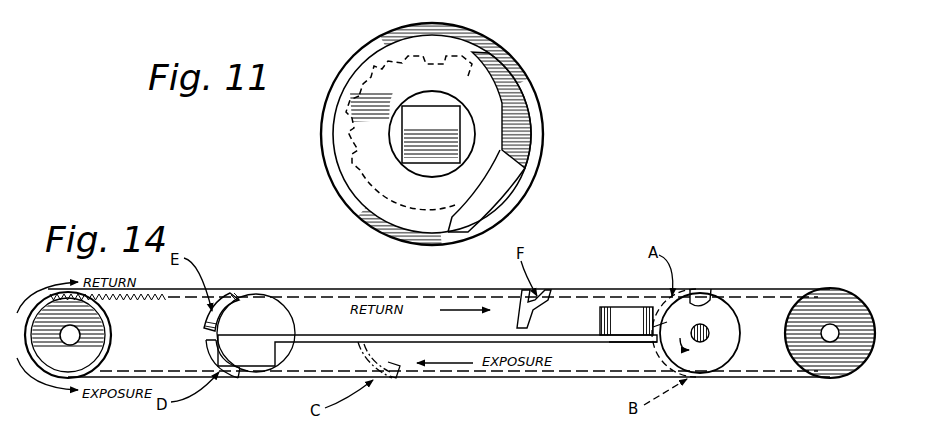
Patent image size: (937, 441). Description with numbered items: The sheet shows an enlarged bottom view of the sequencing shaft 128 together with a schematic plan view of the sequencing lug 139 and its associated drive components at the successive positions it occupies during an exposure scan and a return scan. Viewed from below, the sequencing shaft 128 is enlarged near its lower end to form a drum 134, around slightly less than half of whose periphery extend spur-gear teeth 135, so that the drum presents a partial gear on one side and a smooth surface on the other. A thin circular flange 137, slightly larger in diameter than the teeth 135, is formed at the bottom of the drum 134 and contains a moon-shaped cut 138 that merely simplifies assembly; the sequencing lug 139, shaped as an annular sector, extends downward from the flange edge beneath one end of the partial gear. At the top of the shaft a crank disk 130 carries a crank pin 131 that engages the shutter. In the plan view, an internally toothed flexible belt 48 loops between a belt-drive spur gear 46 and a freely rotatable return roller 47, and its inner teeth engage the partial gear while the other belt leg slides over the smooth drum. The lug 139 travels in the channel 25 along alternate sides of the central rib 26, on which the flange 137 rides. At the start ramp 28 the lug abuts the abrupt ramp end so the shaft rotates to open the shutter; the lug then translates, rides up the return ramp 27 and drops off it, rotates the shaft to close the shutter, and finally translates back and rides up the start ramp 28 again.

In FIG. 14, the channel 25 is at (332, 302).
In FIG. 14, the rib 26 is at (609, 342).
In FIG. 14, the return ramp 27 is at (262, 355).
In FIG. 14, the start ramp 28 is at (600, 322).
In FIG. 14, the belt-drive spur gear 46 is at (100, 350).
In FIG. 14, the return roller 47 is at (850, 372).
In FIG. 14, the flexible belt 48 is at (297, 378).
In FIG. 11, the sequencing shaft 128 is at (550, 131).
In FIG. 11, the crank disk 130 is at (484, 46).
In FIG. 14, the crank disk 130 is at (296, 281).
In FIG. 11, the crank pin 131 is at (378, 58).
In FIG. 11, the drum 134 is at (539, 153).
In FIG. 11, the spur-gear teeth 135 is at (342, 153).
In FIG. 11, the circular flange 137 is at (361, 208).
In FIG. 11, the moon-shaped cut 138 is at (488, 216).
In FIG. 11, the sequencing lug 139 is at (509, 88).
In FIG. 14, the sequencing lug 139 is at (513, 281).